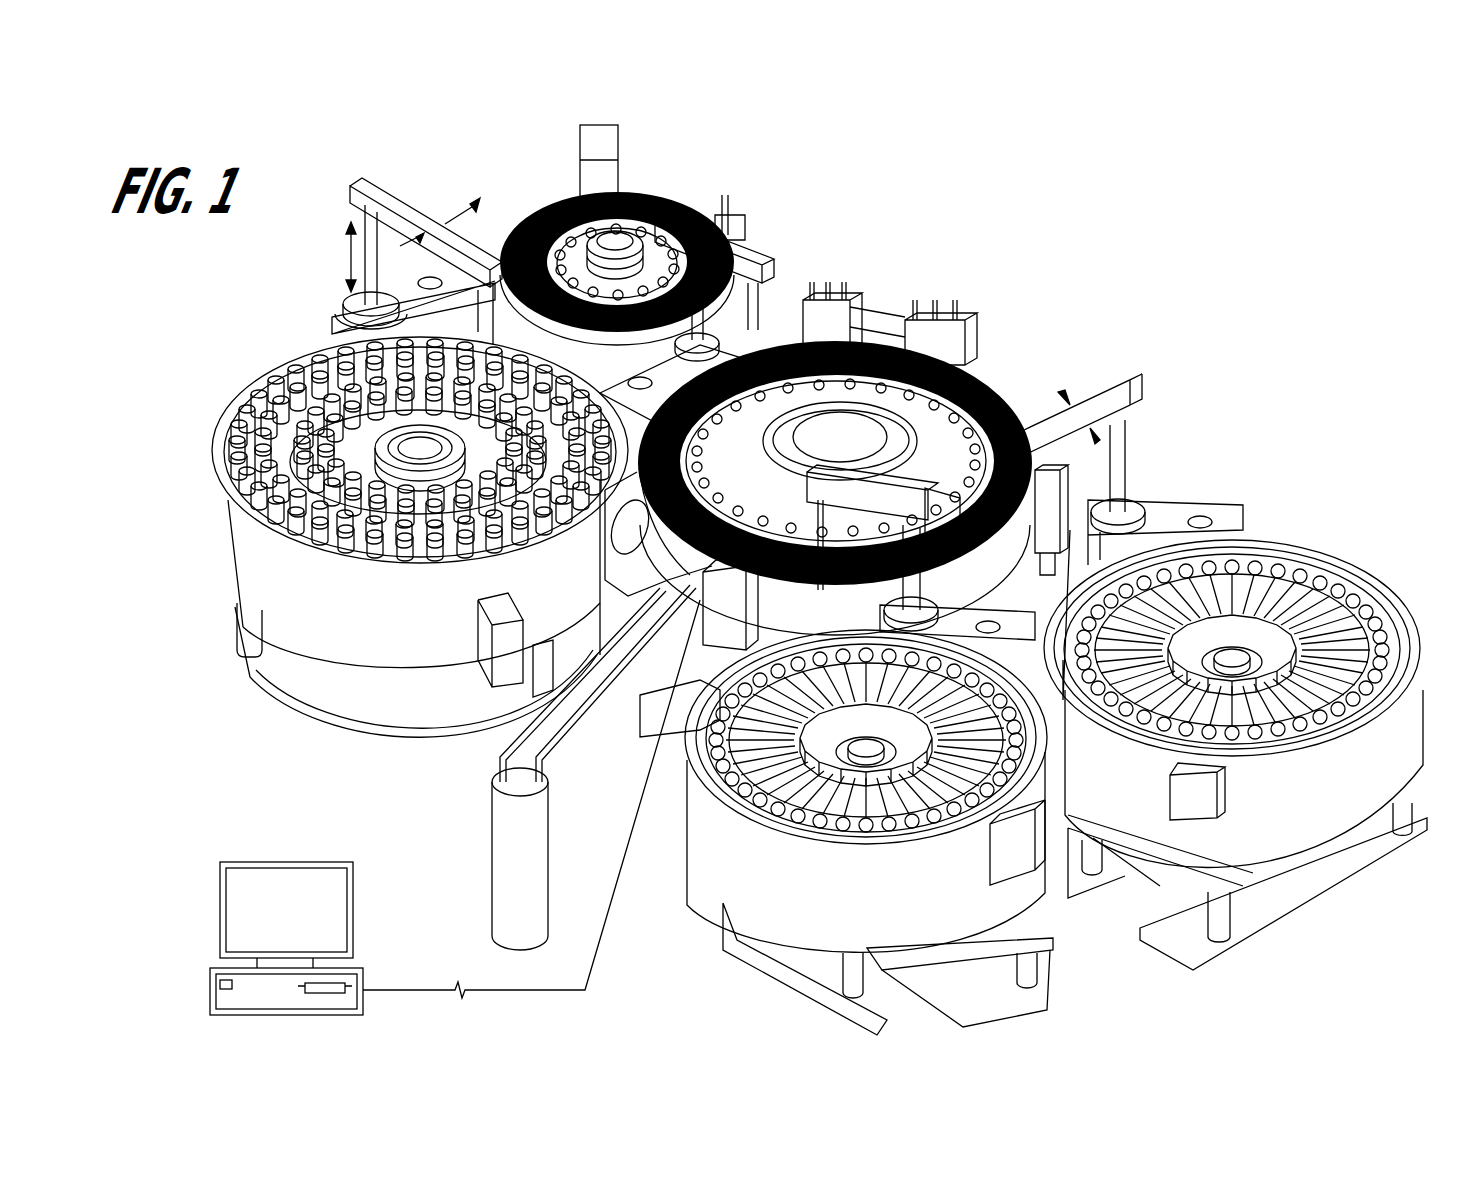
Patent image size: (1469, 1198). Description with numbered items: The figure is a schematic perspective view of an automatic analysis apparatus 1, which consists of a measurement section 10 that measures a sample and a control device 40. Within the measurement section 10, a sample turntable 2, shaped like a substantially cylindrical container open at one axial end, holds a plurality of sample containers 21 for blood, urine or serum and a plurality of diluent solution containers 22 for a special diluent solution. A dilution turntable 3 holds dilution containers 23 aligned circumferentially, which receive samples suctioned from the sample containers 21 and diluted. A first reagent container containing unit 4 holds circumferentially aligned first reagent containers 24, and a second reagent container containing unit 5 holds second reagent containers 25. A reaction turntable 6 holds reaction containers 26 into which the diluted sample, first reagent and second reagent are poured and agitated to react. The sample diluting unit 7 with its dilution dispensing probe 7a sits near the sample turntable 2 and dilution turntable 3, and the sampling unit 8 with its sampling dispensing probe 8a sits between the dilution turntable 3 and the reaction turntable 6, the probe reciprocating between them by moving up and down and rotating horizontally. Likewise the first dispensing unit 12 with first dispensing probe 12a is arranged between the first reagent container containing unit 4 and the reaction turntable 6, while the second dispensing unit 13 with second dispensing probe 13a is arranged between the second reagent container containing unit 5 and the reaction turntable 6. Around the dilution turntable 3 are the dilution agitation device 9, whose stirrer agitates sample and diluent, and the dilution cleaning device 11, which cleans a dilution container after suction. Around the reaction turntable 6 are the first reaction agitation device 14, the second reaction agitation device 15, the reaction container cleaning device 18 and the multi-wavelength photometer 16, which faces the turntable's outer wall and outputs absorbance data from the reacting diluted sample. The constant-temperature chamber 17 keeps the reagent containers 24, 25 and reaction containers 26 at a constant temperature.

The automatic analysis apparatus 1 is at (817, 575).
The sample turntable 2 is at (240, 532).
The dilution turntable 3 is at (538, 208).
The first reagent container containing unit 4 is at (705, 848).
The second reagent container containing unit 5 is at (1410, 718).
The reaction turntable 6 is at (975, 380).
The sample diluting unit 7 is at (336, 170).
The dilution dispensing probe 7a is at (360, 300).
The sampling unit 8 is at (818, 180).
The sampling dispensing probe 8a is at (772, 300).
The dilution agitation device 9 is at (618, 143).
The measurement section 10 is at (1088, 258).
The dilution cleaning device 11 is at (735, 218).
The first dispensing unit 12 is at (905, 400).
The first dispensing probe 12a is at (640, 788).
The second dispensing unit 13 is at (1202, 372).
The second dispensing probe 13a is at (1050, 490).
The first reaction agitation device 14 is at (985, 540).
The second reaction agitation device 15 is at (1050, 400).
The multi-wavelength photometer 16 is at (662, 700).
The constant-temperature chamber 17 is at (540, 868).
The reaction container cleaning device 18 is at (848, 292).
The sample containers 21 is at (248, 405).
The diluent solution containers 22 is at (300, 362).
The dilution containers 23 is at (656, 226).
The first reagent containers 24 is at (760, 808).
The second reagent containers 25 is at (1330, 572).
The reaction containers 26 is at (1005, 385).
The control device 40 is at (282, 862).